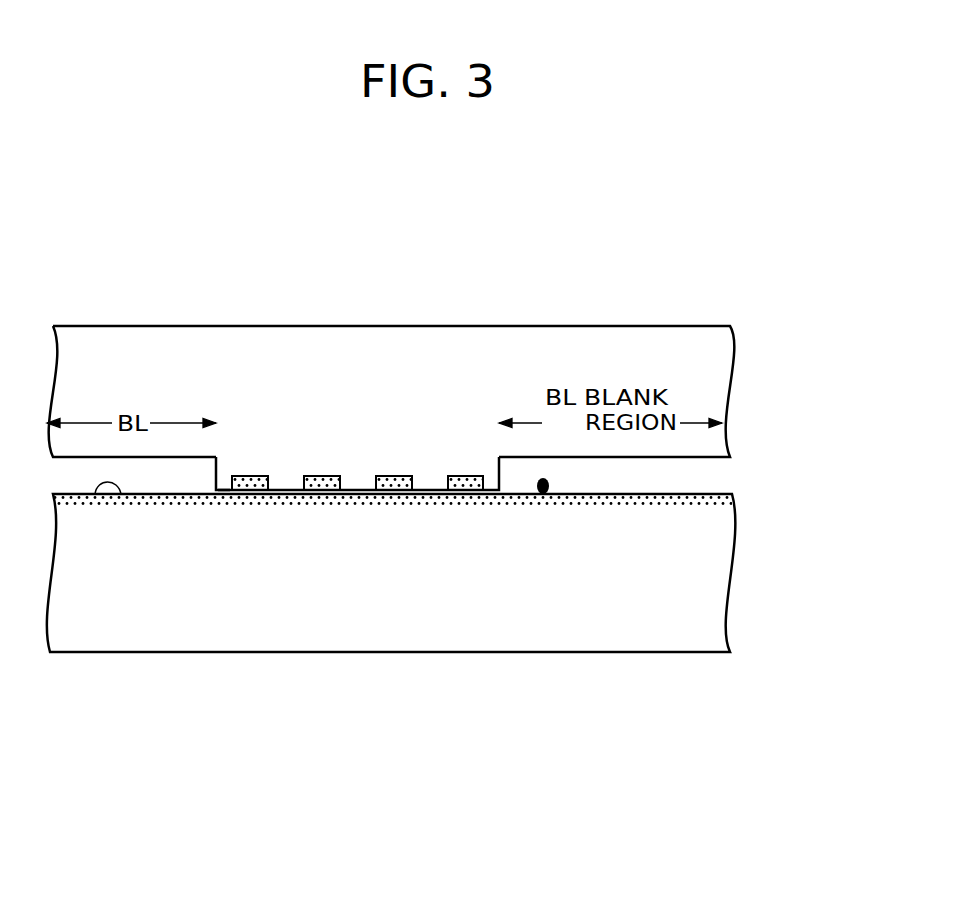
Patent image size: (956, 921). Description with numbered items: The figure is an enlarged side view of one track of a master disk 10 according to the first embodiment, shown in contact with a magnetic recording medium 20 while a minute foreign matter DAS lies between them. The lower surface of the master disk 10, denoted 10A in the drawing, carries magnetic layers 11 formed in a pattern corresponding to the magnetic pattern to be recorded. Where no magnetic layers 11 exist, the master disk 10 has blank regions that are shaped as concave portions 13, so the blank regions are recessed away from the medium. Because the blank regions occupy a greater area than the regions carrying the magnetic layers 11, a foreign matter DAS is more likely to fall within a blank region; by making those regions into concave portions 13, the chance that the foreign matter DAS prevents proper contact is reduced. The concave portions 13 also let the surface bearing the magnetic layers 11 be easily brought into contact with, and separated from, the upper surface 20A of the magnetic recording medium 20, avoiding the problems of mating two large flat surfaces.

The master disk 10 is at (605, 326).
The surface of master disk 10A is at (222, 482).
The magnetic layer 11 is at (463, 476).
The concave portion 13 is at (570, 467).
The magnetic recording medium 20 is at (702, 635).
The upper surface of the magnetic recording medium 20A is at (121, 494).
The foreign matter DAS is at (545, 494).